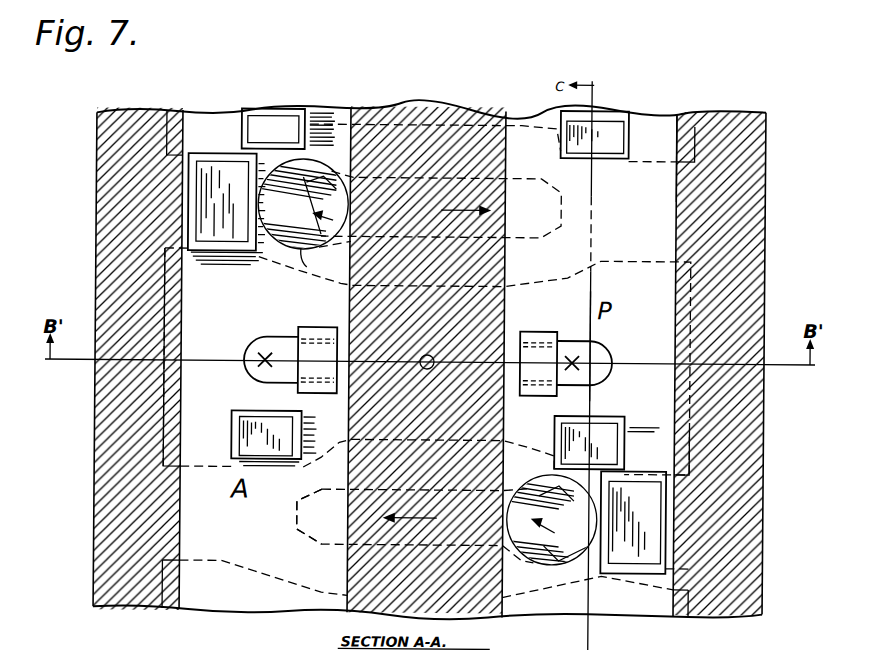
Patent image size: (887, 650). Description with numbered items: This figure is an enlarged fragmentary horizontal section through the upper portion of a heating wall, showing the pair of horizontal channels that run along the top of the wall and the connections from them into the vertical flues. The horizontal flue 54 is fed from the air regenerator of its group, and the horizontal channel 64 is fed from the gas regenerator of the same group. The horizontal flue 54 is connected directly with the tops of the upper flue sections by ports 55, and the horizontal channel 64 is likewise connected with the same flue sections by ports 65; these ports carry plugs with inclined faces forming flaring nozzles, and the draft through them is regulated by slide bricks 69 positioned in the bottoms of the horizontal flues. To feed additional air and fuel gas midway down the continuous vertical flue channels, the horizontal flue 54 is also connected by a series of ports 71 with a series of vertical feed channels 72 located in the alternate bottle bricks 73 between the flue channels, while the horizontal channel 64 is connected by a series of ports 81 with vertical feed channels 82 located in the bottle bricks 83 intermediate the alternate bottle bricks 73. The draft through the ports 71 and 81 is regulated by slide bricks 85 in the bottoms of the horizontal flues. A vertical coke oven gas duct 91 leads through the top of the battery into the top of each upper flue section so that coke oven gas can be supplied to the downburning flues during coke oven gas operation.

The horizontal flue 54 is at (219, 428).
The port 55 is at (288, 347).
The horizontal channel 64 is at (615, 339).
The port 65 is at (597, 355).
The slide brick 69 is at (250, 418).
The port 71 is at (323, 205).
The vertical feed channel 72 is at (525, 197).
The bottle brick 73 is at (640, 197).
The port 81 is at (533, 528).
The vertical feed channel 82 is at (327, 518).
The bottle brick 83 is at (210, 522).
The slide brick 85 is at (213, 198).
The coke oven gas duct 91 is at (433, 356).